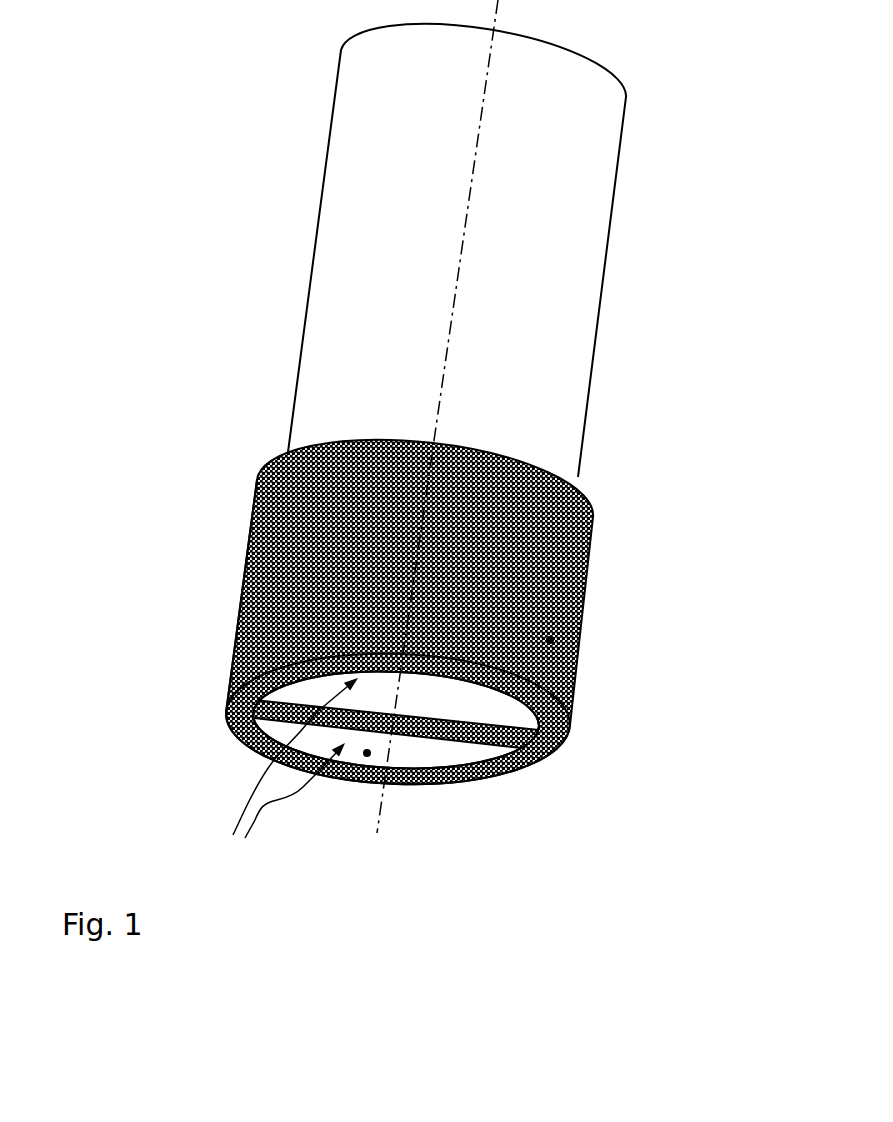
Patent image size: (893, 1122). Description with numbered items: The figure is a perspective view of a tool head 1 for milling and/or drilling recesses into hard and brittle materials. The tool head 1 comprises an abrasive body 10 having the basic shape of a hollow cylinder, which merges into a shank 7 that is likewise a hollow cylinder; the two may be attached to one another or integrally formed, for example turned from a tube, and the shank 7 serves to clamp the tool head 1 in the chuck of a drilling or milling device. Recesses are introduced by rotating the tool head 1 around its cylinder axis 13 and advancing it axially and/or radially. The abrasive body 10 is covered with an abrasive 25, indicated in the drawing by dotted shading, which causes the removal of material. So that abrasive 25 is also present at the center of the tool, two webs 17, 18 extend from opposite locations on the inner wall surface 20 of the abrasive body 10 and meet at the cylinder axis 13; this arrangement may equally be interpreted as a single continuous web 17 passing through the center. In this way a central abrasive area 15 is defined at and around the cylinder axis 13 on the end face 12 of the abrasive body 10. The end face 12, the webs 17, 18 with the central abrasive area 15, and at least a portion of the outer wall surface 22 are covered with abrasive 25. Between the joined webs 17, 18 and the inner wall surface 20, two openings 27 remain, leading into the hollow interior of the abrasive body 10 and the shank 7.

The tool head 1 is at (119, 202).
The shank 7 is at (607, 233).
The abrasive body 10 is at (430, 667).
The end face 12 is at (545, 762).
The cylinder axis 13 is at (377, 833).
The central abrasive area 15 is at (410, 733).
The web 17 is at (322, 702).
The web 18 is at (497, 722).
The inner wall surface 20 is at (367, 753).
The outer wall surface 22 is at (263, 597).
The abrasive 25 is at (550, 640).
The openings 27 is at (286, 781).